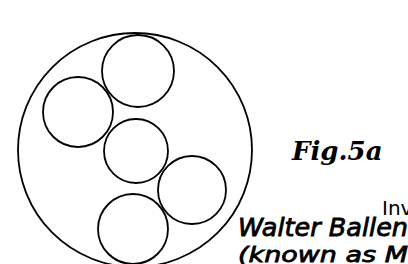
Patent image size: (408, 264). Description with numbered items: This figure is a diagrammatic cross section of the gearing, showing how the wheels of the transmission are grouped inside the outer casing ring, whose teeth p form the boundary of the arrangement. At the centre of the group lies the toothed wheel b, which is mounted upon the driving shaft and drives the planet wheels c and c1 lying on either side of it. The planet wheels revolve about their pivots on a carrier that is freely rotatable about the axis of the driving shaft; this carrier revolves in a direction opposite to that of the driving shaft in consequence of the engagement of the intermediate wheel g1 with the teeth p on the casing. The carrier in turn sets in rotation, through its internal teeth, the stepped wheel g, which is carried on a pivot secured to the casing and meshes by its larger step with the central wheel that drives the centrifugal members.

The casing teeth P is at (242, 104).
The stepped wheel g is at (138, 71).
The planet wheel c is at (78, 112).
The toothed wheel b is at (136, 151).
The planet wheel c1 is at (192, 190).
The intermediate wheel g1 is at (133, 229).